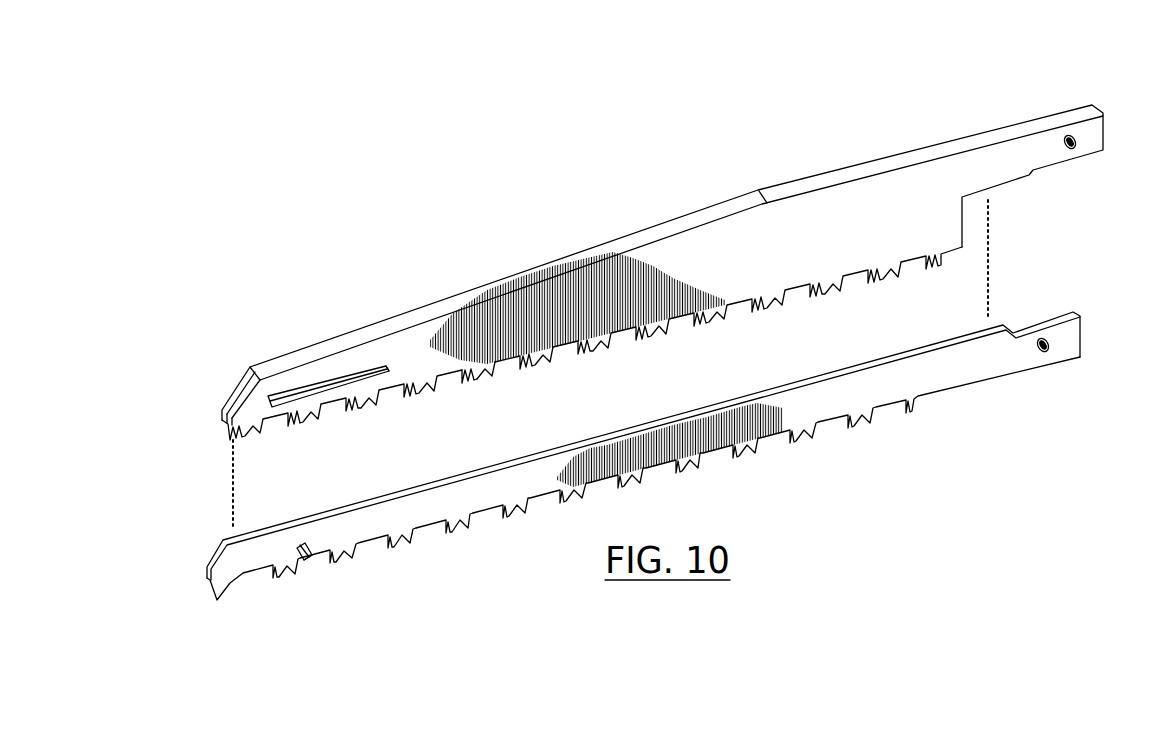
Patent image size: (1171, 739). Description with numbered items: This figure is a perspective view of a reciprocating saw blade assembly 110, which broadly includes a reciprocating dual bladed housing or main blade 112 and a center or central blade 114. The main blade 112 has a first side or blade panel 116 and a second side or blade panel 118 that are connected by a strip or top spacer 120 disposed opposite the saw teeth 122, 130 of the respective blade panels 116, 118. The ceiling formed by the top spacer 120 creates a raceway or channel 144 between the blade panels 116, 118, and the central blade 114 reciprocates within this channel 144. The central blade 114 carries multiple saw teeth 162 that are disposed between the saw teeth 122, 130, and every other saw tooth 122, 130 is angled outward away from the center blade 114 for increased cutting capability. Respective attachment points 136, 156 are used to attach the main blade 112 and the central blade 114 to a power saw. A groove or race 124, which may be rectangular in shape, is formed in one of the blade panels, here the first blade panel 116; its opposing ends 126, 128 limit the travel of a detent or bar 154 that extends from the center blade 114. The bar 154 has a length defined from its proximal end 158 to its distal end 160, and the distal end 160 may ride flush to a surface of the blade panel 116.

The saw blade assembly 110 is at (880, 80).
The main blade 112 is at (737, 182).
The central blade 114 is at (649, 470).
The first blade panel 116 is at (592, 343).
The second blade panel 118 is at (240, 385).
The top spacer 120 is at (576, 256).
The saw teeth 122 is at (496, 370).
The race 124 is at (352, 372).
The end of race 126 is at (277, 397).
The end of race 128 is at (393, 368).
The saw teeth 130 is at (466, 373).
The attachment point 136 is at (1080, 142).
The channel 144 is at (230, 402).
The bar 154 is at (316, 546).
The attachment point 156 is at (1052, 350).
The proximal end 158 is at (301, 547).
The distal end 160 is at (306, 559).
The saw teeth 162 is at (455, 523).